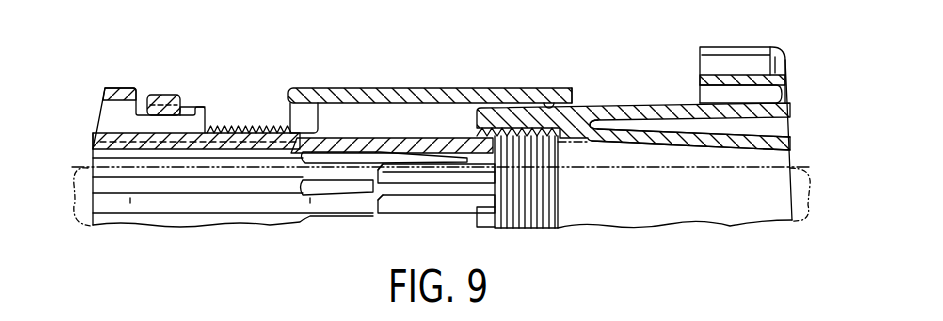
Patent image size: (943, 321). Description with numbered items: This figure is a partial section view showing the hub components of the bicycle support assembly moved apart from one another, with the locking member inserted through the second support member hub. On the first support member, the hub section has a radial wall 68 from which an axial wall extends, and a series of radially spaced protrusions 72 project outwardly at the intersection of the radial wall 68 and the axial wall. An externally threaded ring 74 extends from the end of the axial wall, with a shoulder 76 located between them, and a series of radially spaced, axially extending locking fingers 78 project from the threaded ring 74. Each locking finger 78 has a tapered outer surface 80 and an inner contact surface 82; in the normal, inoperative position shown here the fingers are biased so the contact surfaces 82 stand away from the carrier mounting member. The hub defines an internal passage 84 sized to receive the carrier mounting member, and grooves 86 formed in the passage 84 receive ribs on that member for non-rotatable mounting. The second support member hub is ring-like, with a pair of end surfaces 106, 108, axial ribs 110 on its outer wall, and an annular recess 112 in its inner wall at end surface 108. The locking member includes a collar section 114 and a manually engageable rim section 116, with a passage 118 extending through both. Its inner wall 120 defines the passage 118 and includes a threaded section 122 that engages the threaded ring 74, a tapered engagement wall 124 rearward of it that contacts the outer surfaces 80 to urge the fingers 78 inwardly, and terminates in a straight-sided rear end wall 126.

The radial wall 68 is at (157, 88).
The protrusions 72 is at (153, 107).
The externally threaded ring 74 is at (241, 127).
The shoulder 76 is at (207, 117).
The locking fingers 78 is at (353, 131).
The tapered outer surface 80 is at (392, 138).
The inner contact surface 82 is at (450, 175).
The internal passage 84 is at (150, 152).
The grooves 86 is at (160, 187).
The end surface 106 is at (290, 96).
The end surface 108 is at (571, 95).
The axial ribs 110 is at (313, 128).
The annular recess 112 is at (547, 100).
The collar section 114 is at (626, 100).
The rim section 116 is at (736, 45).
The passage 118 is at (775, 157).
The inner wall 120 is at (750, 152).
The threaded section 122 is at (528, 212).
The tapered engagement wall 124 is at (652, 147).
The straight-sided rear end wall 126 is at (733, 213).